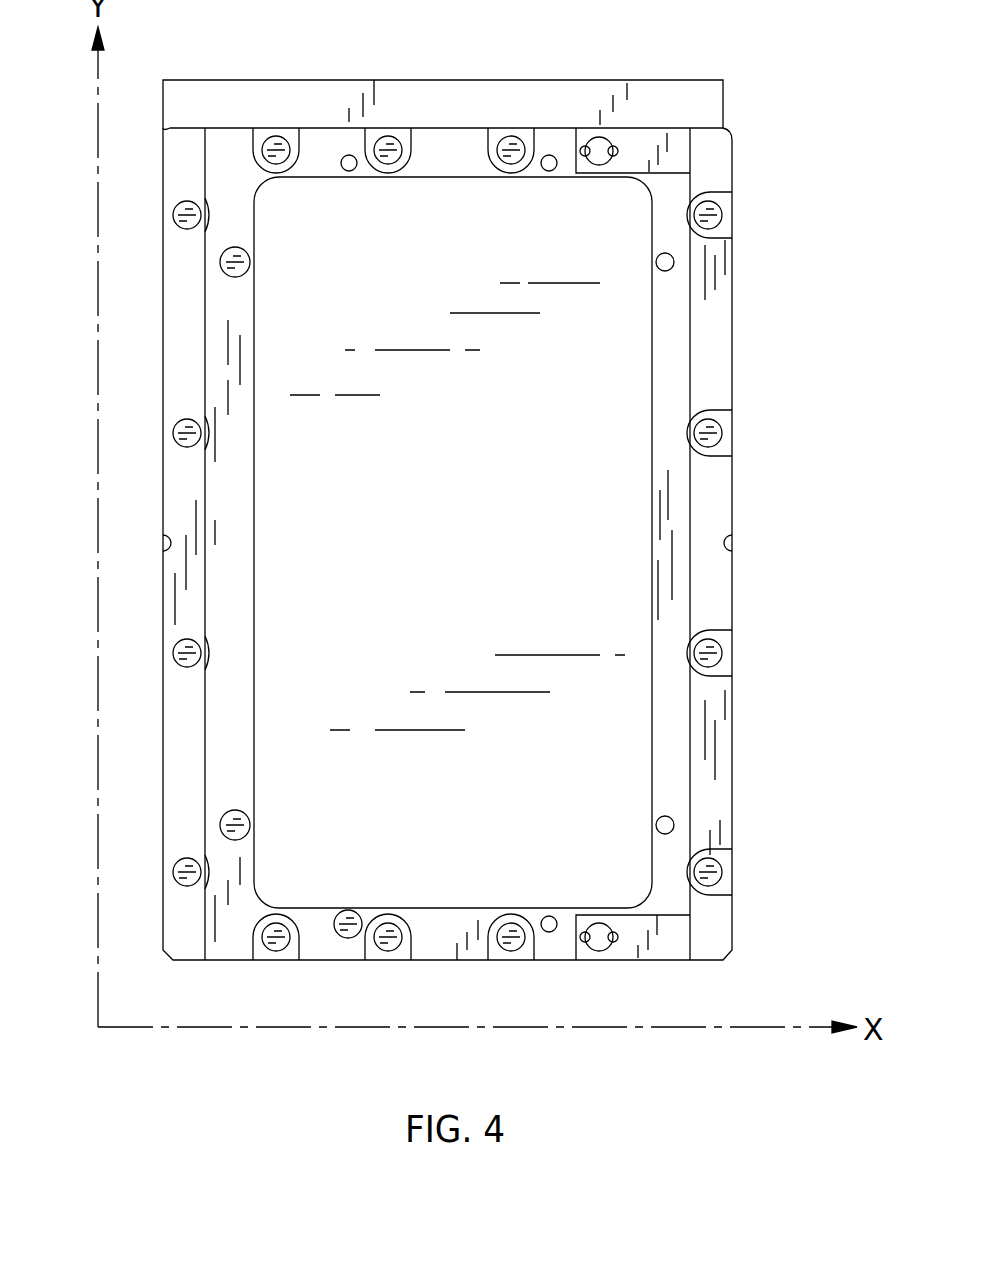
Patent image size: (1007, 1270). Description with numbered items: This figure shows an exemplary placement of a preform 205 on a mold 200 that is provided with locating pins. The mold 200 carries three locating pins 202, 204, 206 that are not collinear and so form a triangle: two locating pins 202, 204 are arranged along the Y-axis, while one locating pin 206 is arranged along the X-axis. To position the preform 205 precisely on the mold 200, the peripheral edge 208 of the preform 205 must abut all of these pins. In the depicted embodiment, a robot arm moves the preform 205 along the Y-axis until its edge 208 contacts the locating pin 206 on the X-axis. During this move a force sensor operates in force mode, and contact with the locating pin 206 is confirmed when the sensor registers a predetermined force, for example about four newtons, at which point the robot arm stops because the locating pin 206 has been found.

The mold 200 is at (550, 138).
The locating pin 202 is at (222, 252).
The locating pin 204 is at (222, 822).
The preform 205 is at (463, 210).
The locating pin 206 is at (347, 960).
The peripheral edge 208 is at (441, 908).